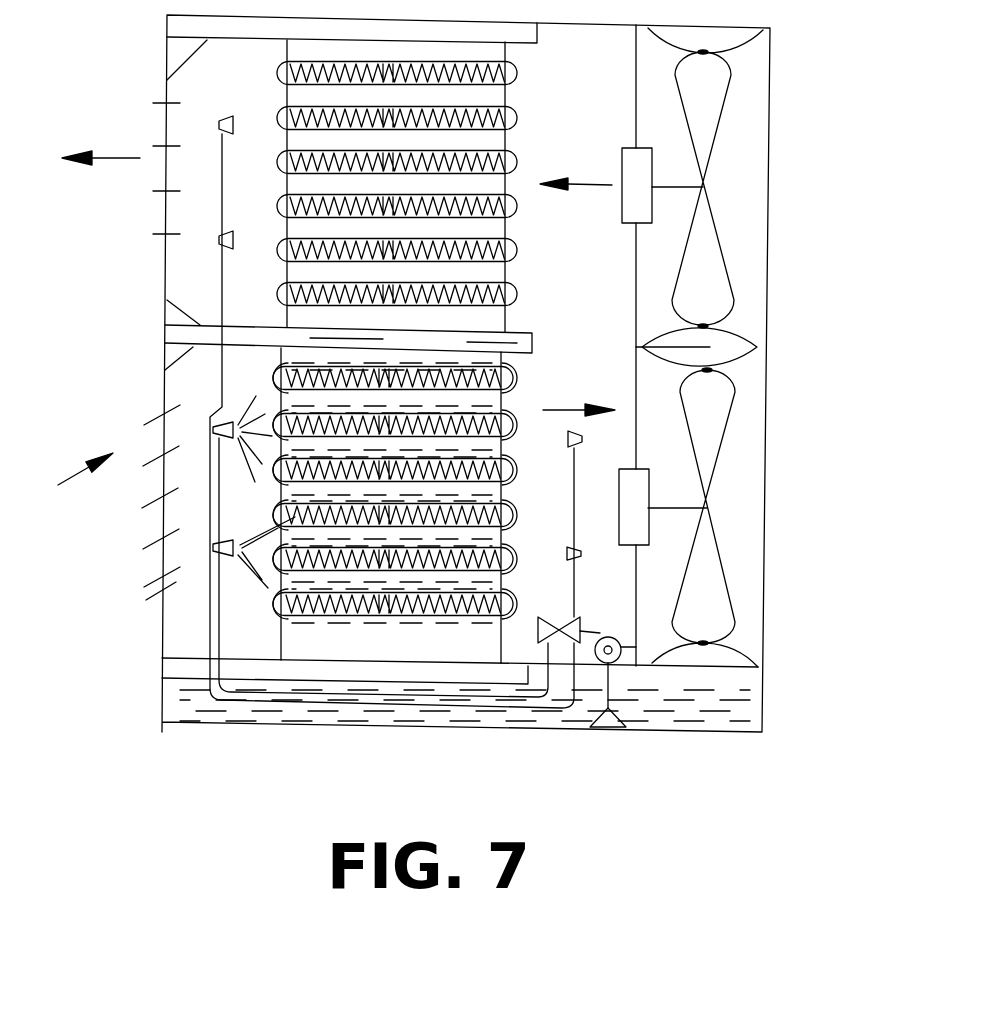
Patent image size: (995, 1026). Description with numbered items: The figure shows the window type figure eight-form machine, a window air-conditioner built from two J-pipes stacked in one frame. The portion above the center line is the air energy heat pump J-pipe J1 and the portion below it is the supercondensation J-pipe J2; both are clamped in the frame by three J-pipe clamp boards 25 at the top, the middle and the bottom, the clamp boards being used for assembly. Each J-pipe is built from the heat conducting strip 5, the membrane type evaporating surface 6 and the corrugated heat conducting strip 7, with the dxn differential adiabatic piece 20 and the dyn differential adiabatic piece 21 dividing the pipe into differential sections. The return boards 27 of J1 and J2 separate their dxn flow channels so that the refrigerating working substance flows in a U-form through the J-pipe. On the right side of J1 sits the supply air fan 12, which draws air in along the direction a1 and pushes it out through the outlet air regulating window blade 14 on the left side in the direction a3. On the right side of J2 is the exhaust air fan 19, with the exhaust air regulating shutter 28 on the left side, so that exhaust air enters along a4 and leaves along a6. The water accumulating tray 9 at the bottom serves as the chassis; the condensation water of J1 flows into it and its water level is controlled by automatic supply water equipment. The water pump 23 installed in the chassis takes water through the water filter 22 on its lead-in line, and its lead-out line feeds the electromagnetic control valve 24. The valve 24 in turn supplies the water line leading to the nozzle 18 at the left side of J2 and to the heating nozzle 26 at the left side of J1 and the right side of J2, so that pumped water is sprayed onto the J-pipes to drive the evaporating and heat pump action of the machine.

The heat conducting strip 5 is at (297, 263).
The membrane type evaporating surface 6 is at (268, 586).
The corrugated heat conducting strip 7 is at (505, 228).
The water accumulating tray 9 is at (763, 688).
The supply air fan 12 is at (710, 113).
The outlet air regulating window blade 14 is at (180, 191).
The nozzle 18 is at (215, 425).
The exhaust air fan 19 is at (727, 453).
The dxn differential adiabatic piece 20 is at (513, 252).
The dyn differential adiabatic piece 21 is at (262, 490).
The water filter 22 is at (620, 720).
The water pump 23 is at (740, 48).
The electromagnetic control valve 24 is at (582, 618).
The J-pipe clamp board 25 is at (192, 27).
The heating nozzle 26 is at (218, 242).
The return board 27 is at (160, 578).
The exhaust air regulating shutter 28 is at (153, 500).
The air energy heat pump J-pipe J1 is at (165, 330).
The supercondensation J-pipe J2 is at (327, 645).
The air flow a1 is at (576, 162).
The air flow a3 is at (101, 135).
The air flow a4 is at (80, 449).
The air flow a6 is at (579, 388).